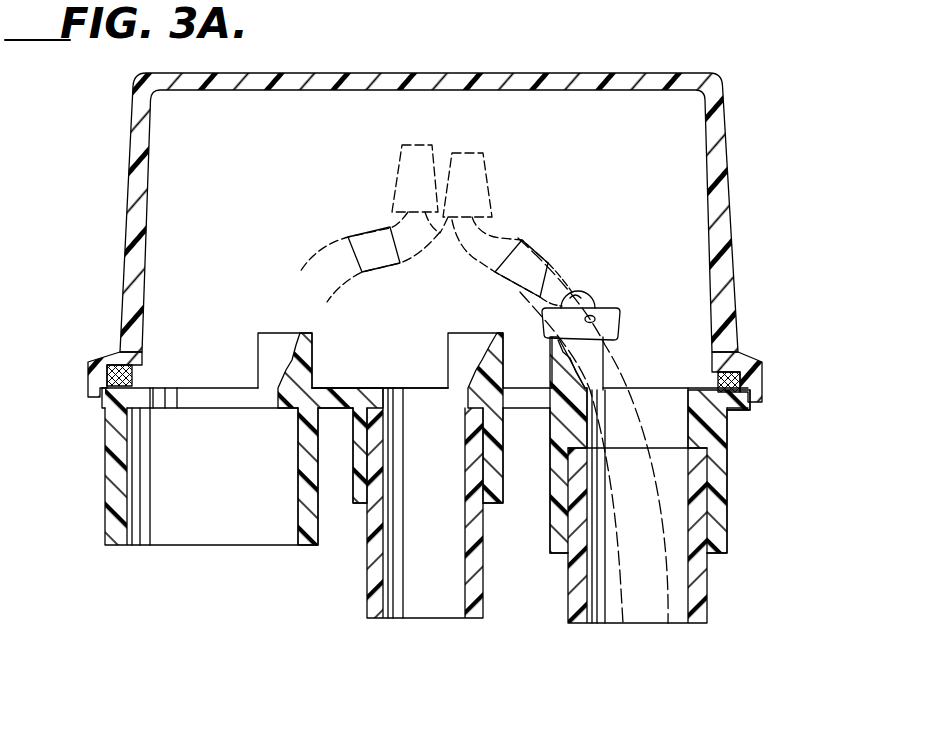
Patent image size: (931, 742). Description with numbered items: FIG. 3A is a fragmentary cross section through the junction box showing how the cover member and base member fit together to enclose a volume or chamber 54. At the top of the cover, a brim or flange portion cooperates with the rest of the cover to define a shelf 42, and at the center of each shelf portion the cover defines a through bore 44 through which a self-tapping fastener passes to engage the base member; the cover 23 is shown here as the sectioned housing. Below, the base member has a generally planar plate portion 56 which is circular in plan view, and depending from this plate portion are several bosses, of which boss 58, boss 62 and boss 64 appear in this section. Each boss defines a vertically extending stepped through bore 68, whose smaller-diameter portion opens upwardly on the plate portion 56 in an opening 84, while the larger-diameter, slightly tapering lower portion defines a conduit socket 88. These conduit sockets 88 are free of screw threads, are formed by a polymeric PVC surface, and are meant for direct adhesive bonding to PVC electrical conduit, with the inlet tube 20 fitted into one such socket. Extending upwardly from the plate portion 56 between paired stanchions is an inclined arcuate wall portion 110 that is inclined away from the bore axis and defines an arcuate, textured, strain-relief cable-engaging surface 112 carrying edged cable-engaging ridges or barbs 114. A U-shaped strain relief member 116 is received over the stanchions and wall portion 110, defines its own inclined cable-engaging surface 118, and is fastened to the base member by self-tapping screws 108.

The inlet tube 20 is at (705, 608).
The housing cover 23 is at (728, 149).
The shelf 42 is at (342, 388).
The through bore 44 is at (120, 368).
The chamber 54 is at (463, 128).
The plate portion 56 is at (753, 416).
The boss 58 is at (503, 486).
The boss 62 is at (722, 480).
The boss 64 is at (115, 526).
The stepped through bore 68 is at (483, 550).
The opening 84 is at (205, 398).
The conduit socket 88 is at (133, 486).
The self-tapping screw 108 is at (592, 300).
The inclined arcuate wall portion 110 is at (308, 333).
The cable-engaging surface 112 is at (620, 333).
The cable-engaging ridge 114 is at (618, 358).
The strain relief member 116 is at (603, 301).
The inclined cable-engaging surface 118 is at (617, 316).